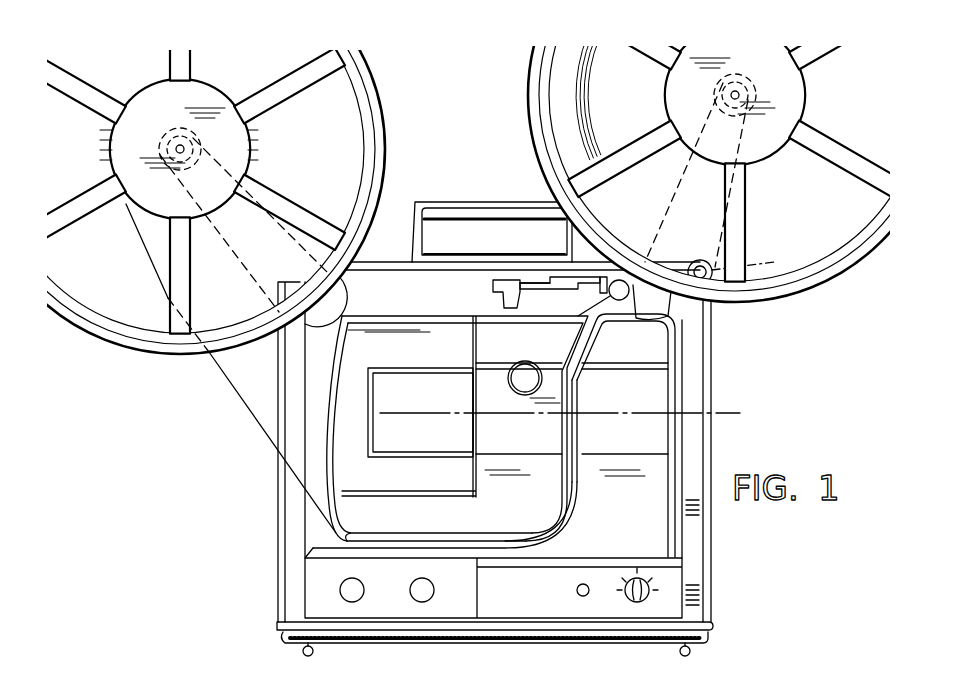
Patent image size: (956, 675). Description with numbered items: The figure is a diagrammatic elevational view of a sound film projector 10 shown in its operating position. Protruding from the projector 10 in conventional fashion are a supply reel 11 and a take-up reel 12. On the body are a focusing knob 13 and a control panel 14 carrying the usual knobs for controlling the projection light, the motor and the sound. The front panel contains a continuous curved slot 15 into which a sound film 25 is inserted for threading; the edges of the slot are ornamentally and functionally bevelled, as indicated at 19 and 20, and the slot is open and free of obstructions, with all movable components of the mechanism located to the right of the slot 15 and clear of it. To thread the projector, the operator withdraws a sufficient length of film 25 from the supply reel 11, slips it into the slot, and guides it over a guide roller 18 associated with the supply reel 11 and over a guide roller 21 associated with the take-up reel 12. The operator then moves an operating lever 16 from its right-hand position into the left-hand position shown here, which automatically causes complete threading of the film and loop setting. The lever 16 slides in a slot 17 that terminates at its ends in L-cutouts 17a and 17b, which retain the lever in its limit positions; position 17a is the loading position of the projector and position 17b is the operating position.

The projector 10 is at (266, 514).
The supply reel 11 is at (826, 278).
The take-up reel 12 is at (158, 350).
The focusing knob 13 is at (526, 362).
The control panel 14 is at (666, 578).
The continuous curved slot 15 is at (580, 496).
The operating lever 16 is at (505, 298).
The slot 17 is at (550, 281).
The L-cutout 17a is at (590, 277).
The L-cutout 17b is at (503, 279).
The guide roller 18 is at (620, 301).
The bevelled edge 19 is at (494, 536).
The bevelled edge 20 is at (517, 549).
The guide roller 21 is at (332, 540).
The sound film 25 is at (256, 426).